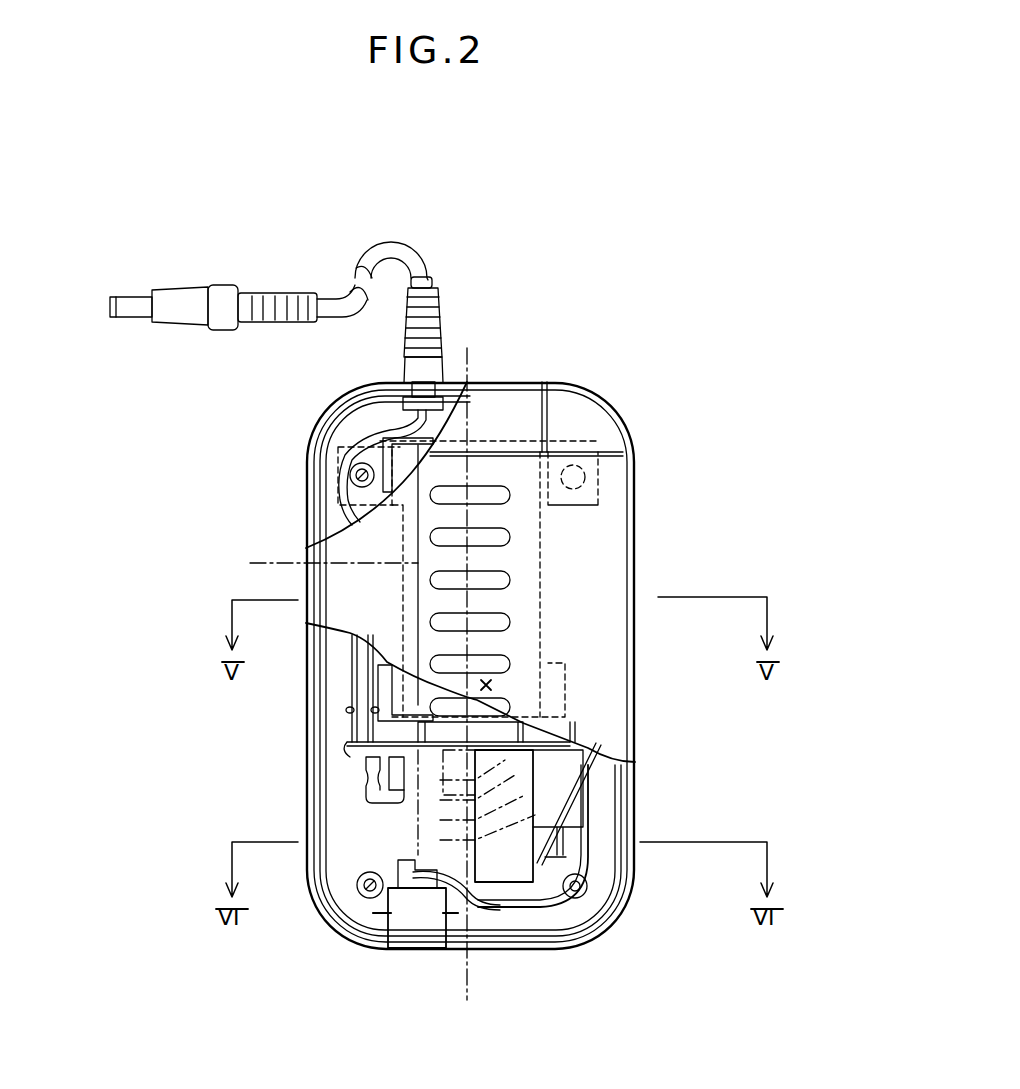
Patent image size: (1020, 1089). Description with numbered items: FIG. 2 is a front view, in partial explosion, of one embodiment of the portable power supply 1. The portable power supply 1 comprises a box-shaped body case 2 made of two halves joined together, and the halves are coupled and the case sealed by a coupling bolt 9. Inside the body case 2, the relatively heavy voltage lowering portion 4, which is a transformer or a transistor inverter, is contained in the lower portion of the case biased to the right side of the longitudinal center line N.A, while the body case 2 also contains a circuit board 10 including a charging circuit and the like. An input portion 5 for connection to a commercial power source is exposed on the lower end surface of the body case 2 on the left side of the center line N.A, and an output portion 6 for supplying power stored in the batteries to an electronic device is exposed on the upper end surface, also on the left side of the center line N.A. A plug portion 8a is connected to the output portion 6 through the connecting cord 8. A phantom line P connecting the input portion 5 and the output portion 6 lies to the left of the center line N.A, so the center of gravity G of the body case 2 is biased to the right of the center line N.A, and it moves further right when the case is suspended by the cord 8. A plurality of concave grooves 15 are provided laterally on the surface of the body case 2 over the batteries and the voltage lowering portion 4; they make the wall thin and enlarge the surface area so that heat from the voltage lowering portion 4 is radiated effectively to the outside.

The portable power supply 1 is at (697, 309).
The body case 2 is at (638, 471).
The voltage lowering portion 4 is at (498, 873).
The input portion 5 is at (412, 922).
The output portion 6 is at (403, 380).
The connecting cord 8 is at (390, 248).
The plug portion 8a is at (178, 297).
The coupling bolt 9 is at (588, 887).
The circuit board 10 is at (357, 752).
The concave grooves 15 is at (493, 660).
The center of gravity G is at (500, 683).
The phantom line P is at (324, 564).
The center line N.A is at (470, 366).